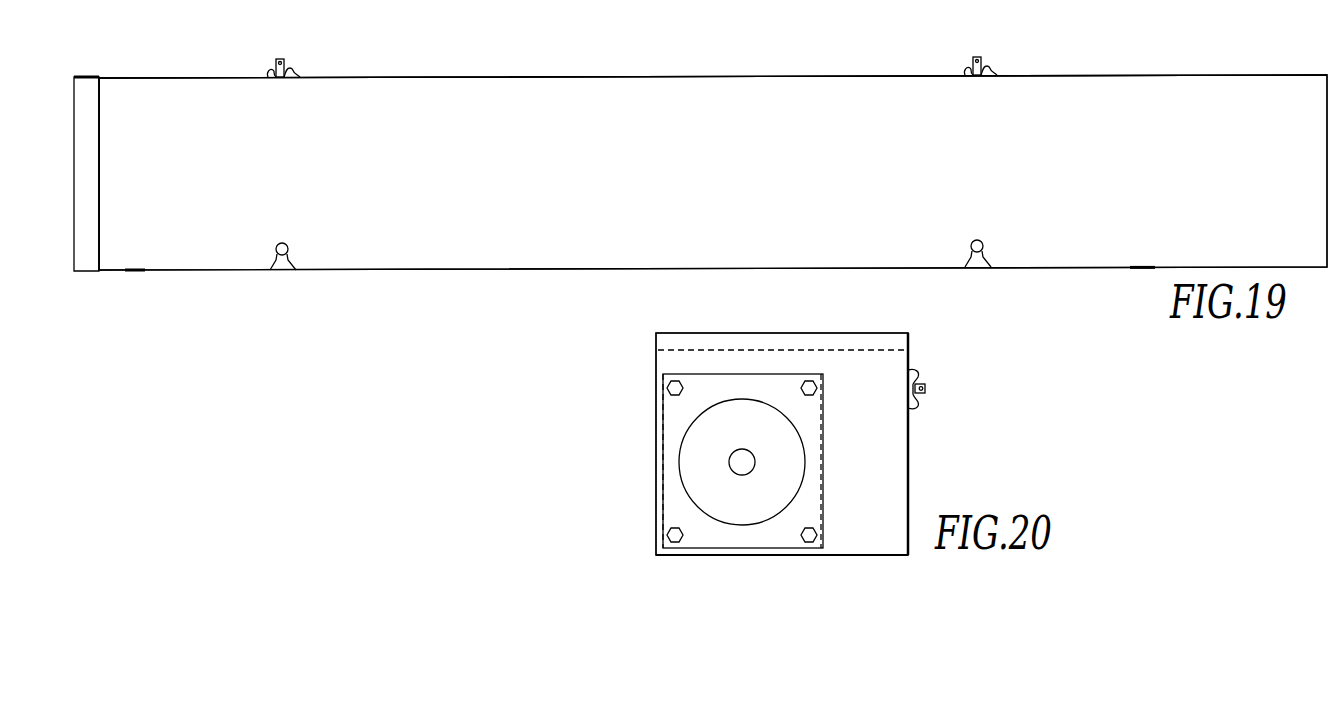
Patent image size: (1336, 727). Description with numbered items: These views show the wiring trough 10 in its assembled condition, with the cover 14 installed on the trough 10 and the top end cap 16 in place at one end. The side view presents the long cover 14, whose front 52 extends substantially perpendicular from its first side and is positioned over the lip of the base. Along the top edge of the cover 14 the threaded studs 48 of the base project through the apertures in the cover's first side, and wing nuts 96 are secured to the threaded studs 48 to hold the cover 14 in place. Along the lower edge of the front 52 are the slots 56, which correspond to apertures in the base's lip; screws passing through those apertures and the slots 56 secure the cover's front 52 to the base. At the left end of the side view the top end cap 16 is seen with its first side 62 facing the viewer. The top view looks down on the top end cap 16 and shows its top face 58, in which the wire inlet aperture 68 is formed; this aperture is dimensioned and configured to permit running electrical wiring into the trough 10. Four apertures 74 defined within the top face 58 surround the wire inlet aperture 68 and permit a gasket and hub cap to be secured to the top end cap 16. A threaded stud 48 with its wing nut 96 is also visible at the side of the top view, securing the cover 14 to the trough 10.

In FIG. 19, the wiring trough 10 is at (447, 62).
In FIG. 20, the wiring trough 10 is at (628, 442).
In FIG. 19, the cover 14 is at (647, 83).
In FIG. 19, the top end cap 16 is at (93, 157).
In FIG. 20, the top end cap 16 is at (900, 453).
In FIG. 19, the threaded studs 48 is at (285, 60).
In FIG. 20, the threaded studs 48 is at (926, 389).
In FIG. 19, the front 52 is at (684, 195).
In FIG. 19, the slots 56 is at (287, 244).
In FIG. 20, the top face 58 is at (883, 340).
In FIG. 19, the first side 62 is at (88, 217).
In FIG. 20, the wire inlet aperture 68 is at (730, 410).
In FIG. 20, the apertures 74 is at (667, 386).
In FIG. 19, the wing nuts 96 is at (298, 72).
In FIG. 20, the wing nuts 96 is at (915, 374).